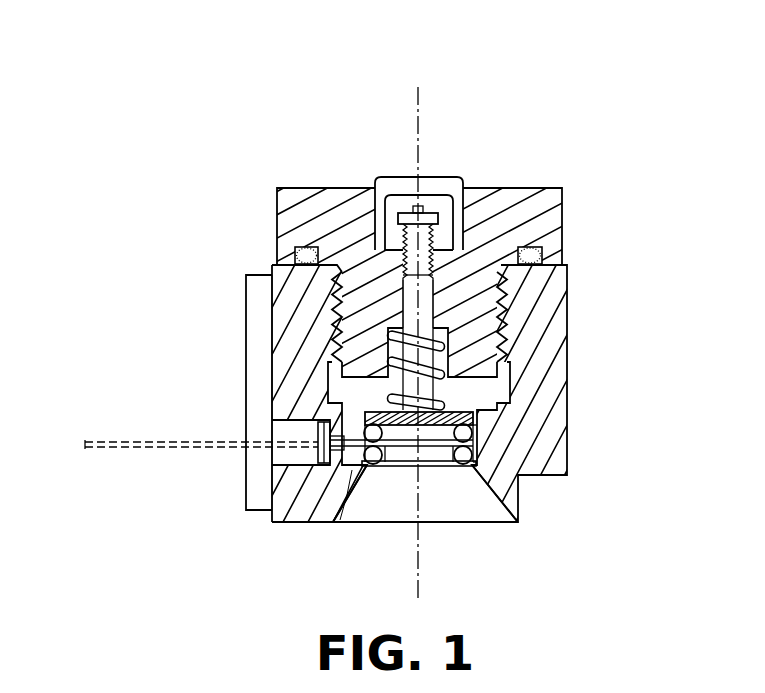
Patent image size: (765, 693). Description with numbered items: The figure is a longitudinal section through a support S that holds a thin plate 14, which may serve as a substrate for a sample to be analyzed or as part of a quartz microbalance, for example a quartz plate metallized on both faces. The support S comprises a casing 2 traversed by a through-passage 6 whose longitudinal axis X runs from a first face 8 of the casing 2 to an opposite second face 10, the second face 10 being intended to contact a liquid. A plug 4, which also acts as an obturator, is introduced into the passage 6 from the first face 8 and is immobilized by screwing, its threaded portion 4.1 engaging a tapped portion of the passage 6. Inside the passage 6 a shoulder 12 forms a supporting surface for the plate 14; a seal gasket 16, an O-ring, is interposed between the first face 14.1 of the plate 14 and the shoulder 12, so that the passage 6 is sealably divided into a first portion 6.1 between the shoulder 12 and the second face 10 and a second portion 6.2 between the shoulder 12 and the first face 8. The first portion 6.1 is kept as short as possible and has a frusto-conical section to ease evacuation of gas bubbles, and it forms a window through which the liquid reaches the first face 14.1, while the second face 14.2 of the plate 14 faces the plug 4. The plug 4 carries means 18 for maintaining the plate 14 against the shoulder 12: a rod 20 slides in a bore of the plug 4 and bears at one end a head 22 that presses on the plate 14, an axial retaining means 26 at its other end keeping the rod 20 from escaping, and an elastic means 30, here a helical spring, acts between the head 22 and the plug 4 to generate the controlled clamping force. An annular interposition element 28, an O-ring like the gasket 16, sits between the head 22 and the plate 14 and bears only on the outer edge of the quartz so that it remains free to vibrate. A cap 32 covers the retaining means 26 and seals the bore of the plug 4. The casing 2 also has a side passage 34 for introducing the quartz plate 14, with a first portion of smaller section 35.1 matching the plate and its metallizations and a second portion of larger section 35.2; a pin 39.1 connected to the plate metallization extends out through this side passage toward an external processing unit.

The casing 2 is at (566, 359).
The plug 4 is at (547, 153).
The threaded portion 4.1 is at (512, 328).
The through-passage 6 is at (350, 395).
The first portion of the passage 6.1 is at (357, 522).
The second portion of the passage 6.2 is at (545, 285).
The first face 8 is at (548, 250).
The second face 10 is at (513, 522).
The shoulder 12 is at (333, 522).
The plate 14 is at (437, 455).
The first face of the plate 14.1 is at (410, 468).
The second face of the plate 14.2 is at (478, 462).
The seal gasket 16 is at (472, 458).
The means for maintaining the plate 18 is at (277, 275).
The rod 20 is at (402, 290).
The head 22 is at (475, 413).
The axial retaining means 26 is at (410, 214).
The annular interposition element 28 is at (345, 442).
The elastic means 30 is at (358, 299).
The cap 32 is at (425, 186).
The side passage 34 is at (322, 440).
The first portion of smaller section 35.1 is at (272, 510).
The second portion of larger section 35.2 is at (273, 468).
The pin 39.1 is at (118, 445).
The support S is at (231, 192).
The longitudinal axis X is at (421, 98).